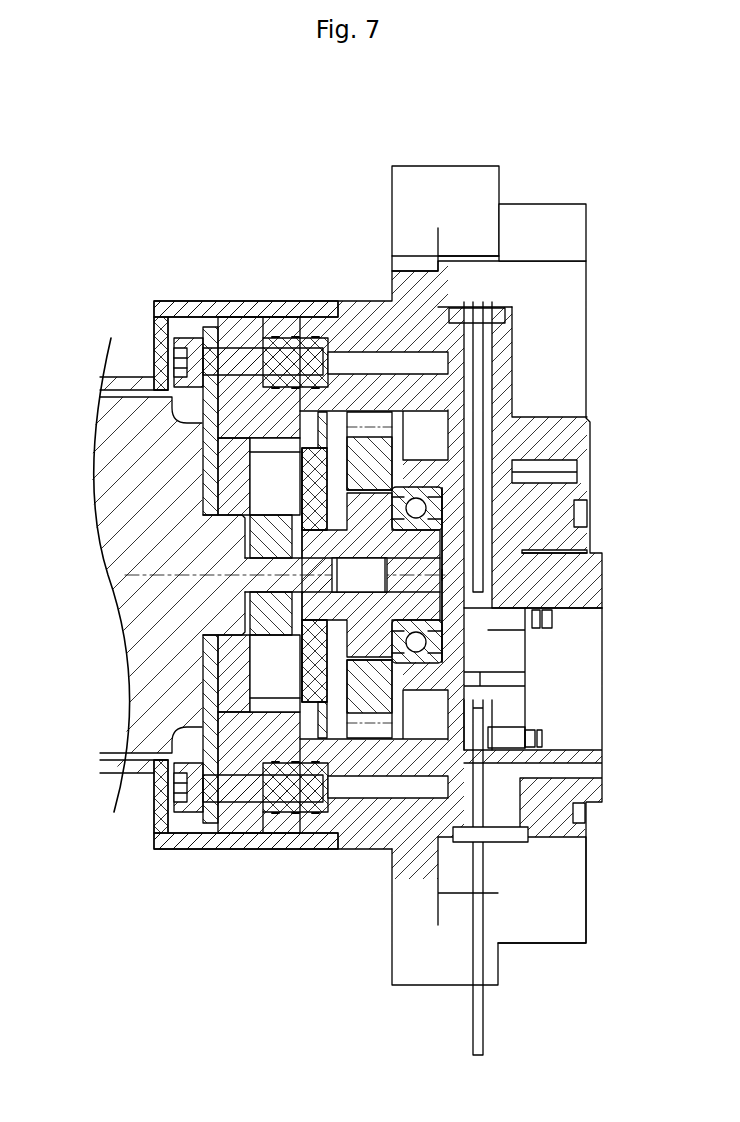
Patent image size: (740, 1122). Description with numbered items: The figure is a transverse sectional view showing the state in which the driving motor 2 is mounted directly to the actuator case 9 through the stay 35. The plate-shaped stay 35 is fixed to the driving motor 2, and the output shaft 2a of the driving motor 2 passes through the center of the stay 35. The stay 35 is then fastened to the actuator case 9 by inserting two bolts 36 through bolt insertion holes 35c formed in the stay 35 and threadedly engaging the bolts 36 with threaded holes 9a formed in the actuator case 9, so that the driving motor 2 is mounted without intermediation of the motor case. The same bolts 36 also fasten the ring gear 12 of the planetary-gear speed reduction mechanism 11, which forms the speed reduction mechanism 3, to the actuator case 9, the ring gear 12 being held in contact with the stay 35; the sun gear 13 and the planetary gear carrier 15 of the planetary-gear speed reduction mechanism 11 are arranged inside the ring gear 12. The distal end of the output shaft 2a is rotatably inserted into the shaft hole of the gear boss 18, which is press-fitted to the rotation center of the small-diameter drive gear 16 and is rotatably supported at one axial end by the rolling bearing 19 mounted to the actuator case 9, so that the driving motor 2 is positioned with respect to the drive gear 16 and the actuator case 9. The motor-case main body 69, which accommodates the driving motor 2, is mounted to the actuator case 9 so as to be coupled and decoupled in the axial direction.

The driving motor 2 is at (100, 455).
The output shaft 2a is at (243, 540).
The speed reduction mechanism 3 is at (235, 317).
The planetary-gear speed reduction mechanism 11 is at (378, 570).
The actuator case 9 is at (445, 185).
The threaded holes 9a is at (333, 350).
The ring gear 12 is at (247, 323).
The sun gear 13 is at (273, 618).
The planetary gear carrier 15 is at (332, 700).
The drive gear 16 is at (382, 447).
The gear boss 18 is at (430, 547).
The rolling bearing 19 is at (442, 487).
The stay 35 is at (212, 328).
The bolt insertion holes 35c is at (187, 360).
The bolts 36 is at (170, 320).
The motor-case main body 69 is at (168, 308).